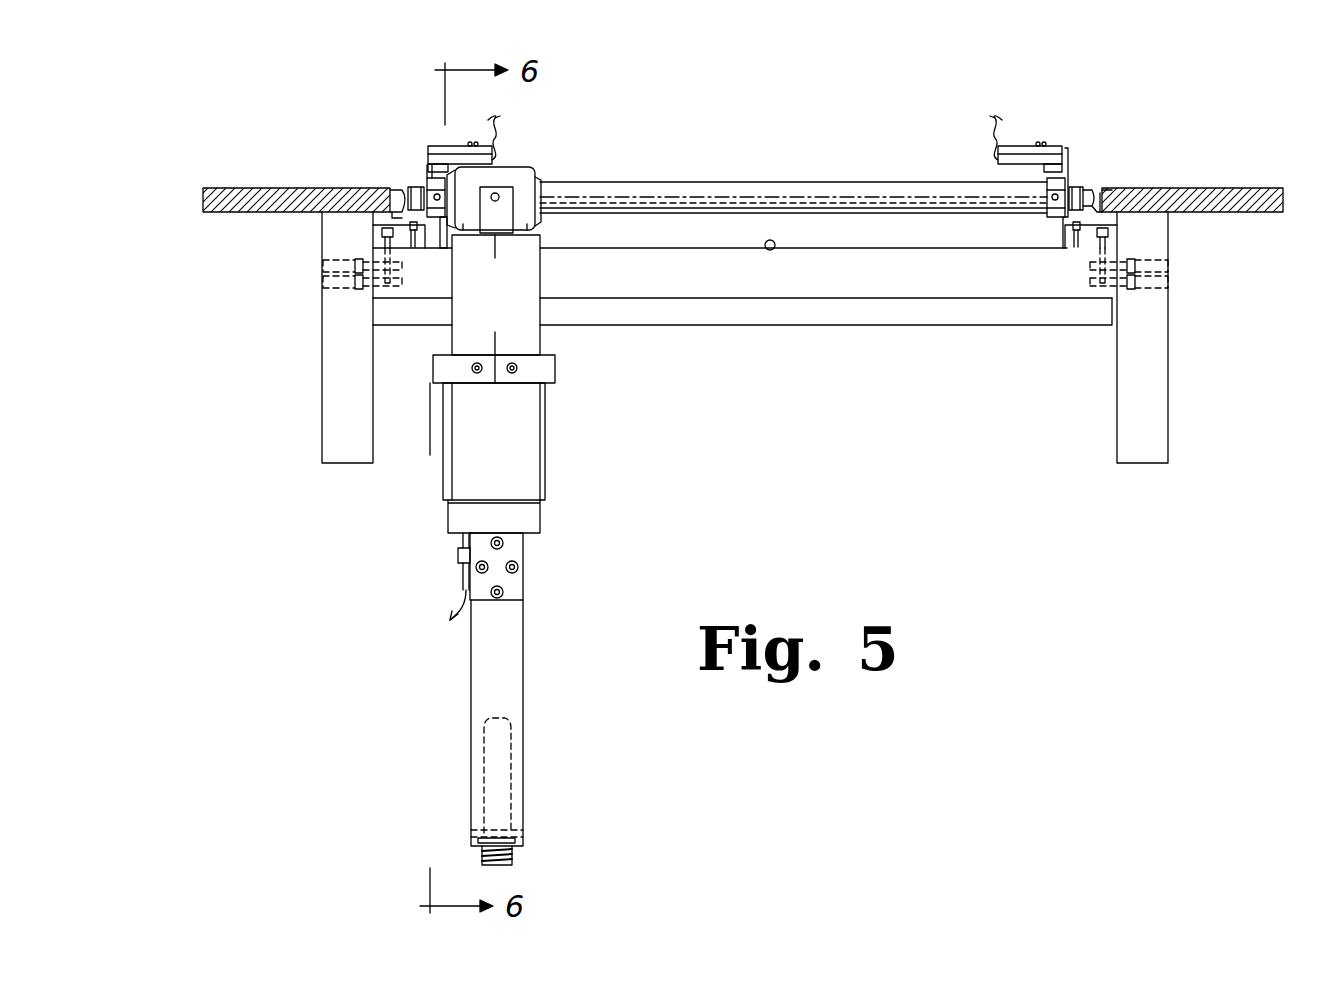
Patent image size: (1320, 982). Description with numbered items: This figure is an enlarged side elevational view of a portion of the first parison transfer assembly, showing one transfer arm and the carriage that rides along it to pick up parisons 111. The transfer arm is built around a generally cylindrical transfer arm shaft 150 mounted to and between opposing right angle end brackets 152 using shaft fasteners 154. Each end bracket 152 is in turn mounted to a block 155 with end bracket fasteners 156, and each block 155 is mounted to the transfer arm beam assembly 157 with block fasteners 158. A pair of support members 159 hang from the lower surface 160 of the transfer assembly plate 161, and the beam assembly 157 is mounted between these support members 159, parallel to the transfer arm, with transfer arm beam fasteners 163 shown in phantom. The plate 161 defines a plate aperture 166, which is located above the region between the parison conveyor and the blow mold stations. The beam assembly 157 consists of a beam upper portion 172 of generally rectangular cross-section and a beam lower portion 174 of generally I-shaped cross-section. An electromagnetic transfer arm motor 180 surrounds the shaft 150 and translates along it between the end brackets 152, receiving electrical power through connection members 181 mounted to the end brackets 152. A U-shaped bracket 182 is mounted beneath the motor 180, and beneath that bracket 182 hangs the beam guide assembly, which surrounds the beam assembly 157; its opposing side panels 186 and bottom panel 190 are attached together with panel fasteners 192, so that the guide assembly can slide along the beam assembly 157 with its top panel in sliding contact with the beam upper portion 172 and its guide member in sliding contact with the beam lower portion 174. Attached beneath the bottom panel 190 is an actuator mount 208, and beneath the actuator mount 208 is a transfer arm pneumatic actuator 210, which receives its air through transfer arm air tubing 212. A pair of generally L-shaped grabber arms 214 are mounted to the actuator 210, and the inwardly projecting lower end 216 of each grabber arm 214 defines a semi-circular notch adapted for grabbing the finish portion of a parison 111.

The parison 111 is at (515, 858).
The transfer arm shaft 150 is at (730, 190).
The end bracket 152 is at (428, 165).
The shaft fastener 154 is at (420, 187).
The block 155 is at (440, 240).
The end bracket fastener 156 is at (408, 195).
The transfer arm beam assembly 157 is at (770, 250).
The block fastener 158 is at (375, 242).
The support member 159 is at (325, 405).
The lower surface 160 is at (222, 213).
The transfer assembly plate 161 is at (1265, 188).
The transfer arm beam fastener 163 is at (323, 282).
The plate aperture 166 is at (1103, 190).
The beam upper portion 172 is at (870, 292).
The beam lower portion 174 is at (1030, 322).
The transfer arm motor 180 is at (535, 178).
The connection member 181 is at (457, 145).
The U-shaped bracket 182 is at (498, 193).
The side panel 186 is at (522, 352).
The bottom panel 190 is at (438, 368).
The panel fastener 192 is at (518, 366).
The actuator mount 208 is at (545, 485).
The transfer arm pneumatic actuator 210 is at (524, 538).
The transfer arm air tubing 212 is at (458, 605).
The grabber arm 214 is at (478, 698).
The lower end 216 is at (515, 838).